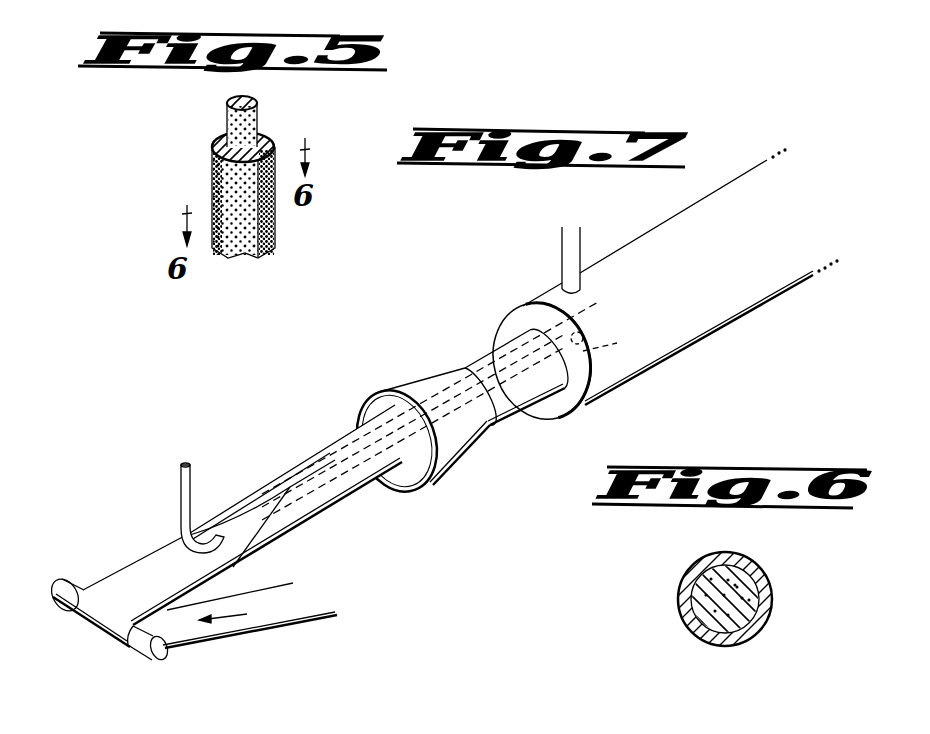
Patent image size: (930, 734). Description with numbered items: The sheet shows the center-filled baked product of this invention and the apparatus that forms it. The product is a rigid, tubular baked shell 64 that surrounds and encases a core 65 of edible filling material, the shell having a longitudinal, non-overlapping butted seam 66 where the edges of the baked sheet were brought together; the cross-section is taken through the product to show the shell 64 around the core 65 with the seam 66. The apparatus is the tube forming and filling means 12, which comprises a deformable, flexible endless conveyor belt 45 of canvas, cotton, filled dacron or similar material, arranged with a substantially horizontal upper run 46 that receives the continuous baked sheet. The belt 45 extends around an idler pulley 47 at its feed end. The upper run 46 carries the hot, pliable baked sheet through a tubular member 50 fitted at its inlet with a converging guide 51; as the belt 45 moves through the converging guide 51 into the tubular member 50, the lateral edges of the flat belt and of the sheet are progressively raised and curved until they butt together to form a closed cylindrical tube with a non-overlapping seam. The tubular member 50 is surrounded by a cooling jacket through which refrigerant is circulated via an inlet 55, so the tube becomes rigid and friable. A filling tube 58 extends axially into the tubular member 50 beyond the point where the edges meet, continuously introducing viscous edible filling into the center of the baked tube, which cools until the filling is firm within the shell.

In FIG. 7, the tube forming and filling means 12 is at (728, 347).
In FIG. 7, the deformable flexible endless conveyor belt 45 is at (196, 632).
In FIG. 7, the upper run 46 is at (130, 572).
In FIG. 7, the idler pulley 47 is at (62, 580).
In FIG. 7, the tubular member 50 is at (794, 286).
In FIG. 7, the converging guide 51 is at (460, 455).
In FIG. 7, the inlet 55 is at (562, 244).
In FIG. 7, the filling tube 58 is at (188, 477).
In FIG. 5, the rigid tubular baked shell 64 is at (213, 182).
In FIG. 6, the rigid tubular baked shell 64 is at (771, 598).
In FIG. 5, the core 65 is at (228, 115).
In FIG. 6, the core 65 is at (705, 603).
In FIG. 5, the longitudinal non-overlapping butted seam 66 is at (259, 235).
In FIG. 6, the longitudinal non-overlapping butted seam 66 is at (728, 563).